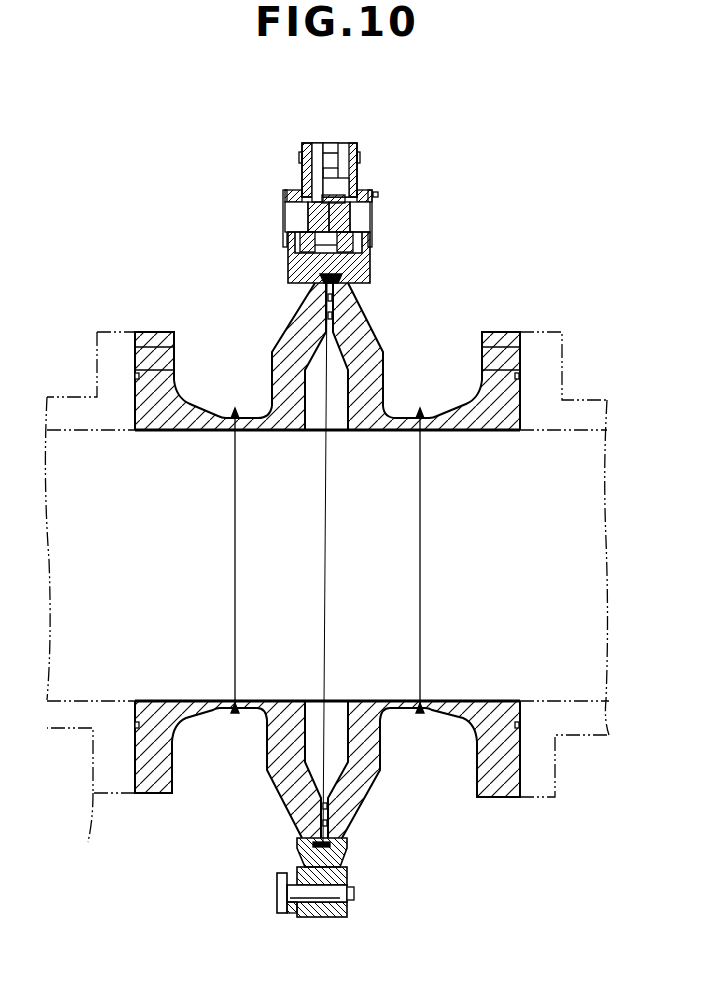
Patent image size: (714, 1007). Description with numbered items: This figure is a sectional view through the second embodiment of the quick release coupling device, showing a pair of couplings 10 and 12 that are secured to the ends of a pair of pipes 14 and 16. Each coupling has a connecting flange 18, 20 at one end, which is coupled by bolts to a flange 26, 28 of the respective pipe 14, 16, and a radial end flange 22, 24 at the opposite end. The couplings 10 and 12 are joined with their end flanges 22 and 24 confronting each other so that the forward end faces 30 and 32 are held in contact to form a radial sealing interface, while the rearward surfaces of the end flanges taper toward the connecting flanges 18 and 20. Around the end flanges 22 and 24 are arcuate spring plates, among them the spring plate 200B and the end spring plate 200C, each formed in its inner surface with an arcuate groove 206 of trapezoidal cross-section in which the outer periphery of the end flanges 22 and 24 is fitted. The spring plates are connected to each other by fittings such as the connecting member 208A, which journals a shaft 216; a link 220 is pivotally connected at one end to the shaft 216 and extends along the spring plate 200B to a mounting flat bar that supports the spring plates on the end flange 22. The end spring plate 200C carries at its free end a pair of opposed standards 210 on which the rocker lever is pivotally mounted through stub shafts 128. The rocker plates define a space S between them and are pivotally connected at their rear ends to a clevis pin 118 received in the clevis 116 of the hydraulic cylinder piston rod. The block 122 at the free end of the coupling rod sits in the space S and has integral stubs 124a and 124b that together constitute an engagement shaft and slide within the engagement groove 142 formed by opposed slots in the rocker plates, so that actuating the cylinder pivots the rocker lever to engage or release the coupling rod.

The coupling 10 is at (206, 400).
The coupling 12 is at (447, 400).
The pipe 14 is at (76, 394).
The pipe 16 is at (589, 394).
The connecting flange 18 is at (147, 793).
The connecting flange 20 is at (485, 798).
The radial end flange 22 is at (295, 320).
The radial end flange 24 is at (362, 303).
The flange 26 is at (97, 800).
The flange 28 is at (523, 798).
The forward end face 30 is at (327, 815).
The forward end face 32 is at (320, 800).
The space S is at (328, 185).
The clevis 116 is at (330, 143).
The clevis pin 118 is at (358, 158).
The block 122 is at (342, 204).
The stub 124a is at (308, 222).
The stub 124b is at (340, 217).
The stub shaft 128 is at (292, 210).
The engagement groove 142 is at (313, 183).
The arcuate spring plate 200B is at (298, 853).
The end spring plate 200C is at (363, 272).
The arcuate groove 206 is at (340, 863).
The connecting member 208A is at (327, 917).
The standards 210 is at (293, 182).
The shaft 216 is at (352, 898).
The link 220 is at (290, 913).